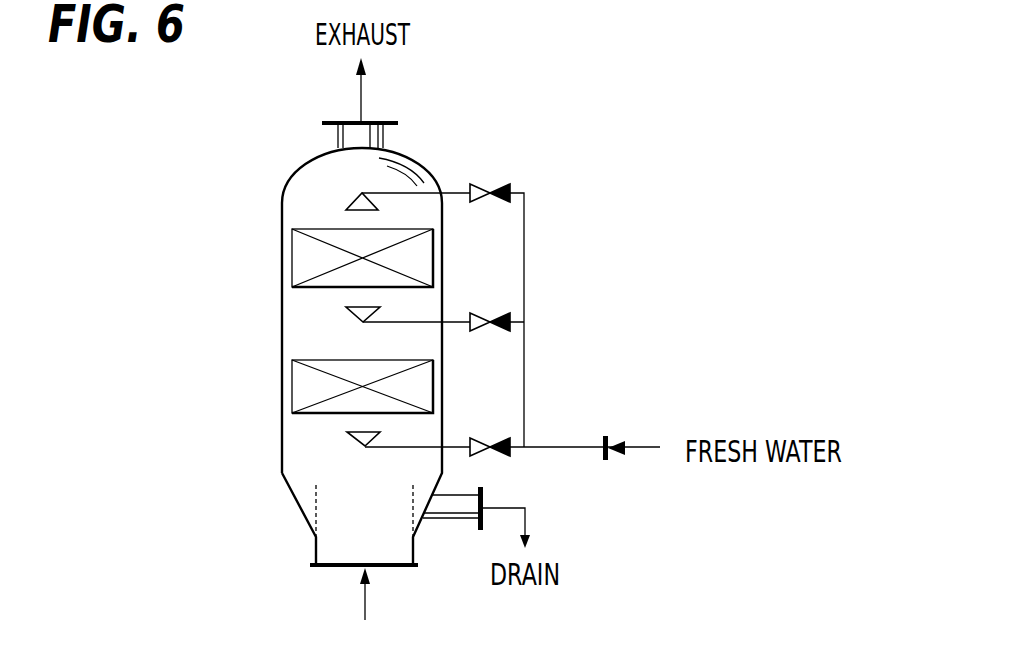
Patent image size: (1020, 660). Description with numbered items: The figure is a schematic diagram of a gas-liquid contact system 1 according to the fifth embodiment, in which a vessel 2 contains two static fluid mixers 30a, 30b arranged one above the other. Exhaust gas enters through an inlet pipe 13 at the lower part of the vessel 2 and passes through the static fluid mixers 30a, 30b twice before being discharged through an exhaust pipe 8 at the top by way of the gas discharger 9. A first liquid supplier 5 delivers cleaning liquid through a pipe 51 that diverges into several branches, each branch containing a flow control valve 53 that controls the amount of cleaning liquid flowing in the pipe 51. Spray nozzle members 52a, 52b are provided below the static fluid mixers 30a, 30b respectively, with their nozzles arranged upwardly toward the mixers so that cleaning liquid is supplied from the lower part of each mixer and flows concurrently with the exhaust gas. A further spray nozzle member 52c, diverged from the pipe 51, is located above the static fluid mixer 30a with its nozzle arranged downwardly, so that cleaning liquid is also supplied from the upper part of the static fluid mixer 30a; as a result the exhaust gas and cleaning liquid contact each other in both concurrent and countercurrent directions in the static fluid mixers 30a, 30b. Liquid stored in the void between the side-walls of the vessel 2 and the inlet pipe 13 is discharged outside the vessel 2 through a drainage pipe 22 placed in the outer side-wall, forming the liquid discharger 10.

The gas-liquid contact system 1 is at (590, 130).
The vessel 2 is at (282, 348).
The first liquid supplier 5 is at (649, 367).
The exhaust pipe 8 is at (388, 134).
The gas discharger 9 is at (290, 113).
The liquid discharger 10 is at (595, 571).
The inlet pipe 13 is at (316, 507).
The drainage pipe 22 is at (445, 508).
The static fluid mixer 30a is at (408, 265).
The static fluid mixer 30b is at (408, 388).
The pipe 51 is at (524, 349).
The spray nozzle member 52a is at (346, 308).
The spray nozzle member 52b is at (347, 433).
The spray nozzle member 52c is at (345, 208).
The flow control valve 53 is at (498, 185).